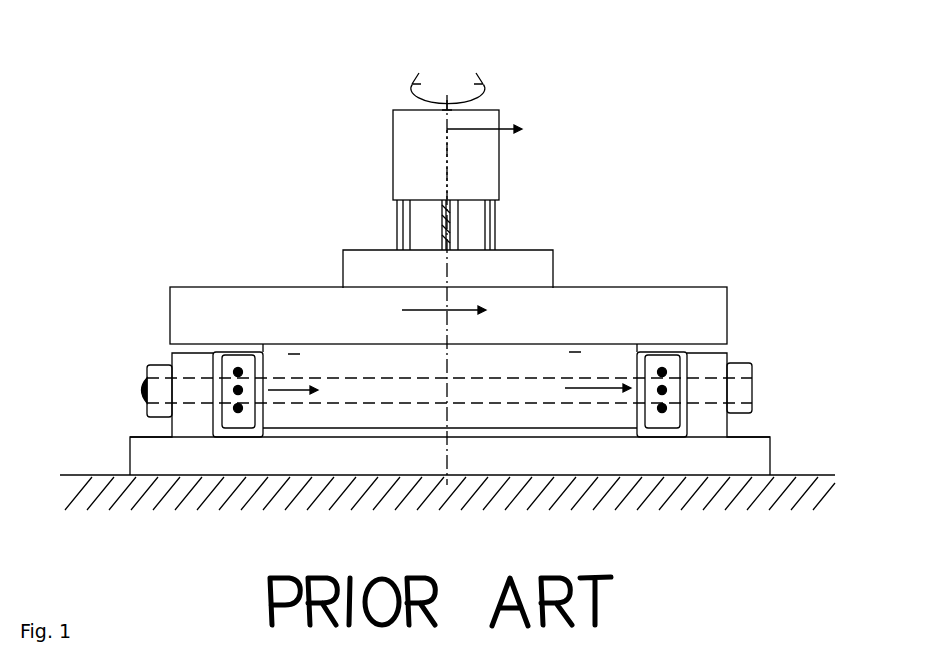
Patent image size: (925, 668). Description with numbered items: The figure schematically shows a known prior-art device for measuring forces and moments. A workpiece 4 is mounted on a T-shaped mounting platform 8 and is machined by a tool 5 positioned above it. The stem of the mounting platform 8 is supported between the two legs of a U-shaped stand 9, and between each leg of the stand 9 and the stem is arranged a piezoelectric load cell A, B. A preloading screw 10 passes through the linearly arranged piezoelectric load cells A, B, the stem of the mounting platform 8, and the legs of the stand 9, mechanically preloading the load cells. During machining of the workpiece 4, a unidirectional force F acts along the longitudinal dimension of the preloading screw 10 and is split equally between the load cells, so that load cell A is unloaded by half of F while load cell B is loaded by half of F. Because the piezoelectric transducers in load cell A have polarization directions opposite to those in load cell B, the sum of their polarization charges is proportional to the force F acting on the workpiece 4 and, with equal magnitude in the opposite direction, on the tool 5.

The tool 5 is at (472, 175).
The workpiece 4 is at (528, 265).
The mounting platform 8 is at (700, 325).
The preloading screw 10 is at (742, 390).
The stand 9 is at (755, 445).
The piezoelectric load cell A is at (238, 405).
The piezoelectric load cell B is at (667, 405).